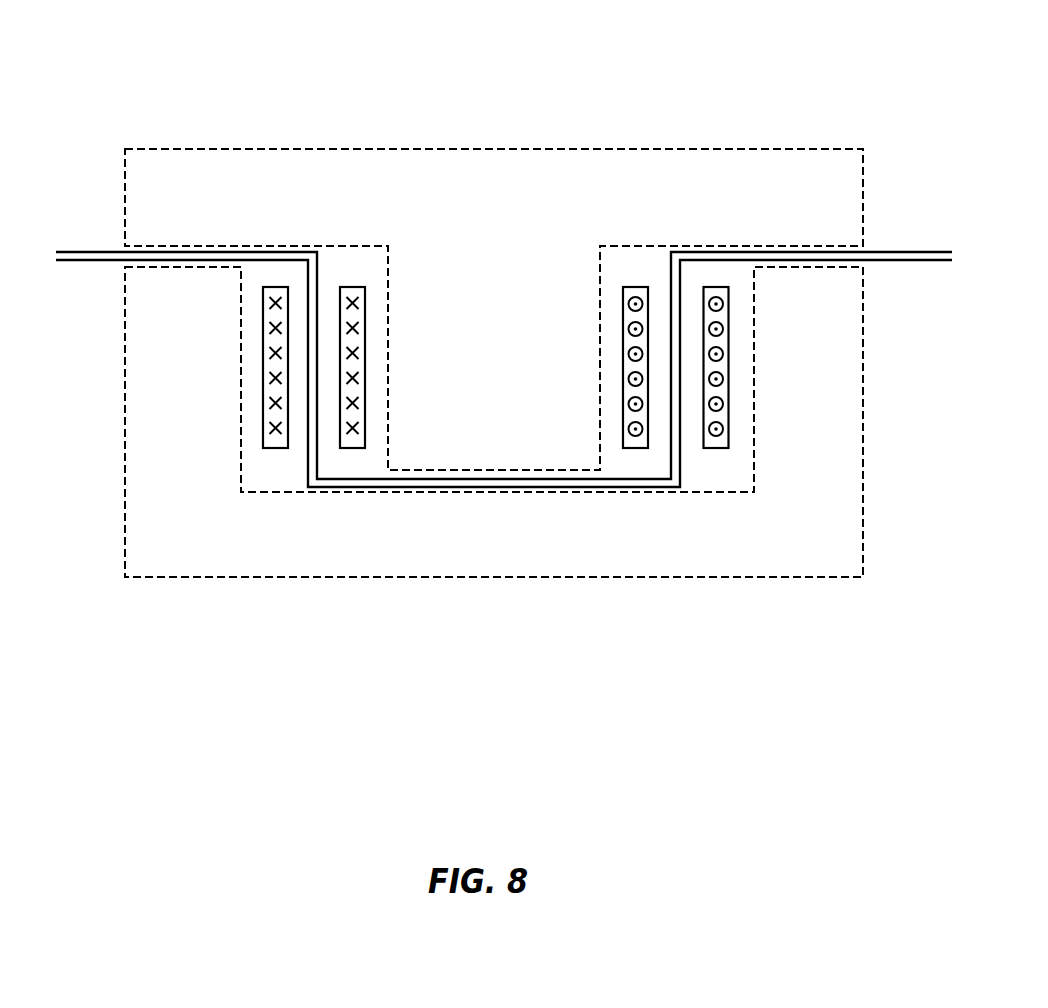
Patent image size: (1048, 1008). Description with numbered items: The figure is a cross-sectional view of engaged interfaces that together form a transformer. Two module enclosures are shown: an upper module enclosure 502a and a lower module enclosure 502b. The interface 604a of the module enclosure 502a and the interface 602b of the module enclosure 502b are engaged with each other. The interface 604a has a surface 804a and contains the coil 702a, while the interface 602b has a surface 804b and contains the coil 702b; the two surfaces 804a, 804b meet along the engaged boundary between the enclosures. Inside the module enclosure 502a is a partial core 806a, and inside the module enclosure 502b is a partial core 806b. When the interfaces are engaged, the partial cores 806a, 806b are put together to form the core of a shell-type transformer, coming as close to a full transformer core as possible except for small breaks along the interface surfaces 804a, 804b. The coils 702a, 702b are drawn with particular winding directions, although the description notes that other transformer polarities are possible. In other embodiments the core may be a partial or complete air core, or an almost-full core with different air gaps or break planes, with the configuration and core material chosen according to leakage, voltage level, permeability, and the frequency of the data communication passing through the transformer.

The module enclosure 502a is at (618, 52).
The interface 604a is at (489, 111).
The partial core 806a is at (693, 149).
The surface 804a is at (883, 250).
The surface 804b is at (910, 261).
The coil 702b is at (709, 287).
The coil 702a is at (638, 287).
The partial core 806b is at (727, 578).
The interface 602b is at (493, 614).
The module enclosure 502b is at (615, 719).